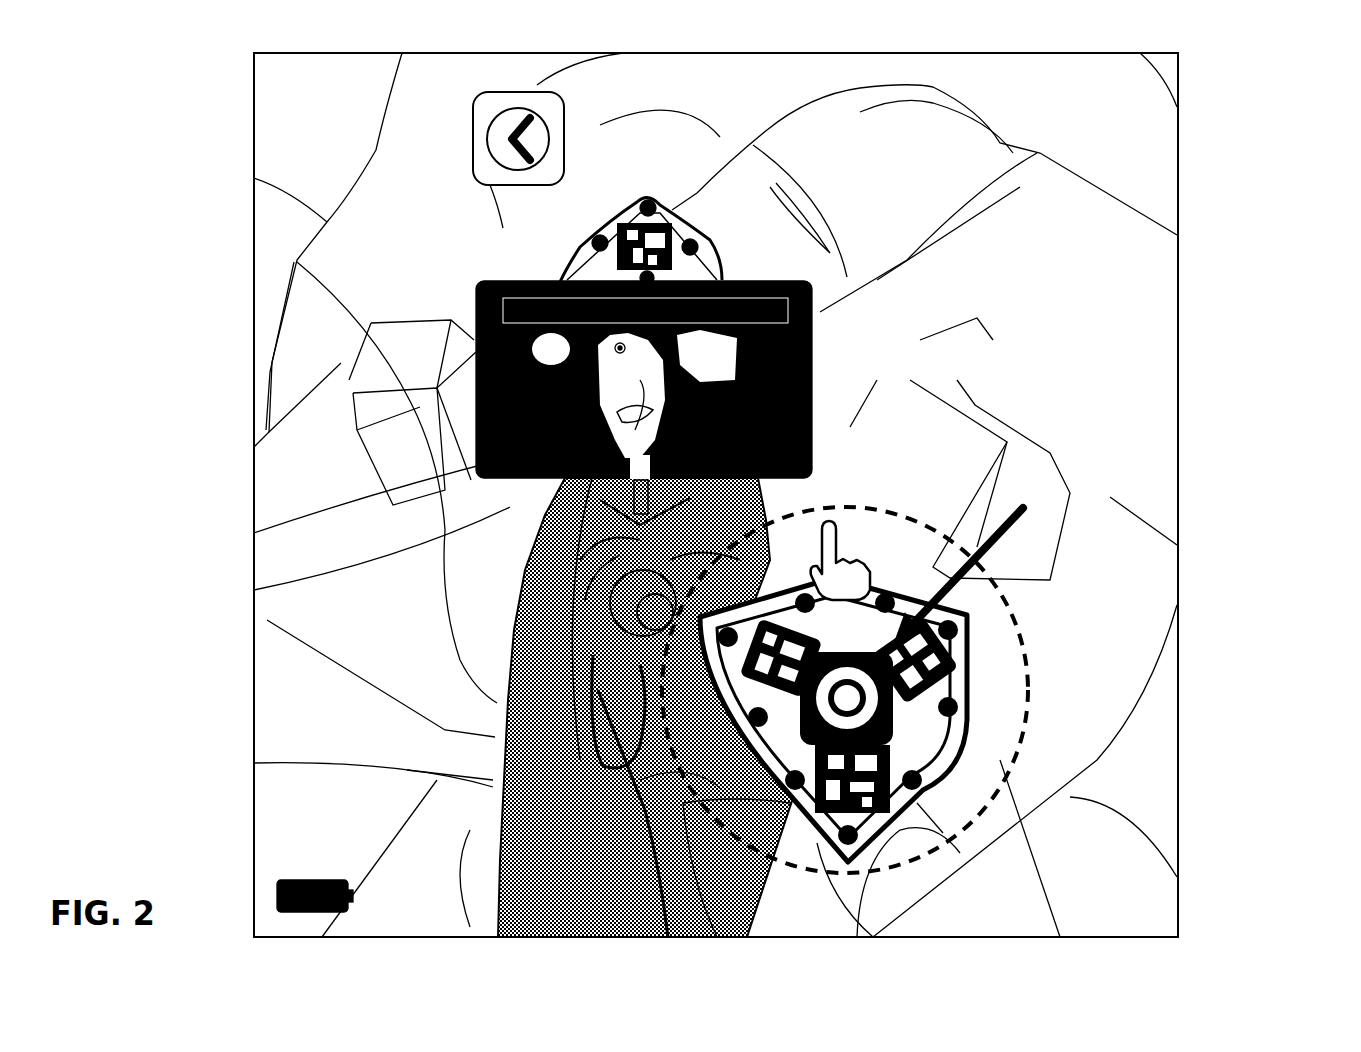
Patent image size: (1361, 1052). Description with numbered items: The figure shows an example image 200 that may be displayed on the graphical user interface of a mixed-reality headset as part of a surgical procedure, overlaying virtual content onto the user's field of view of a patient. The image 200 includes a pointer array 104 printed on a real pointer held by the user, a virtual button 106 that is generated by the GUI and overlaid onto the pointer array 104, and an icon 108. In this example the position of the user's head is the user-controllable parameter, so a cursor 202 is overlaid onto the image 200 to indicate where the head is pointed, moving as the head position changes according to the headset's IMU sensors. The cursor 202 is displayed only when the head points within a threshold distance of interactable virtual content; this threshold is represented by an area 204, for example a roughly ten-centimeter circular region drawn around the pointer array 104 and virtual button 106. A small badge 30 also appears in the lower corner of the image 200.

The display screen 200 is at (1231, 100).
The icon 108 is at (470, 207).
The cursor 202 is at (871, 514).
The area 204 is at (625, 685).
The pointer array 104 is at (968, 804).
The button 106 is at (918, 705).
The indicator badge 30 is at (315, 896).